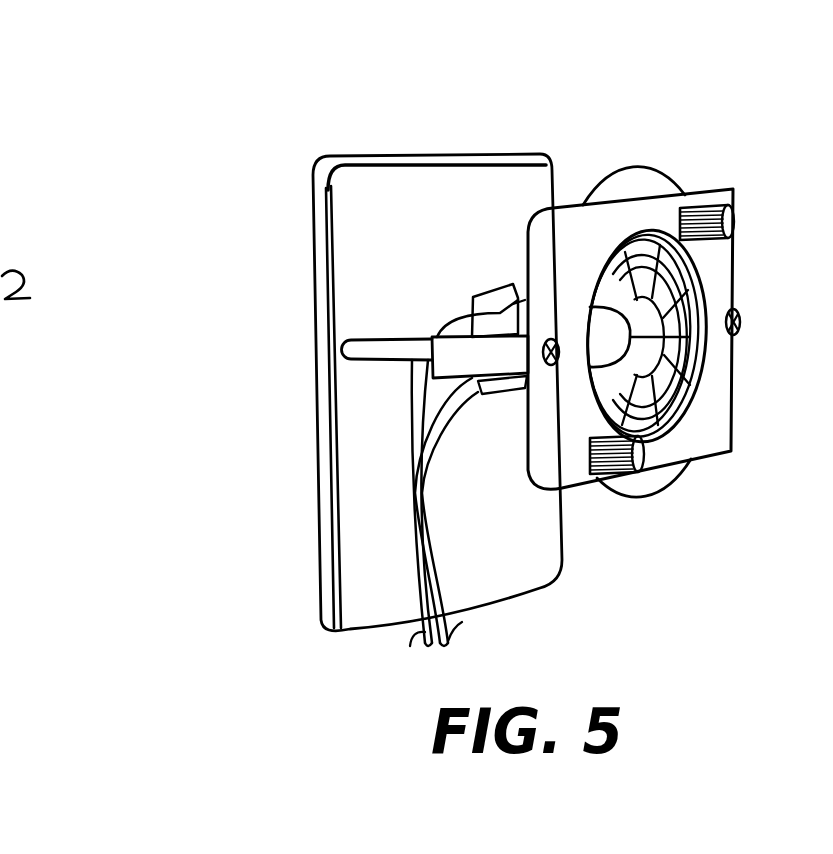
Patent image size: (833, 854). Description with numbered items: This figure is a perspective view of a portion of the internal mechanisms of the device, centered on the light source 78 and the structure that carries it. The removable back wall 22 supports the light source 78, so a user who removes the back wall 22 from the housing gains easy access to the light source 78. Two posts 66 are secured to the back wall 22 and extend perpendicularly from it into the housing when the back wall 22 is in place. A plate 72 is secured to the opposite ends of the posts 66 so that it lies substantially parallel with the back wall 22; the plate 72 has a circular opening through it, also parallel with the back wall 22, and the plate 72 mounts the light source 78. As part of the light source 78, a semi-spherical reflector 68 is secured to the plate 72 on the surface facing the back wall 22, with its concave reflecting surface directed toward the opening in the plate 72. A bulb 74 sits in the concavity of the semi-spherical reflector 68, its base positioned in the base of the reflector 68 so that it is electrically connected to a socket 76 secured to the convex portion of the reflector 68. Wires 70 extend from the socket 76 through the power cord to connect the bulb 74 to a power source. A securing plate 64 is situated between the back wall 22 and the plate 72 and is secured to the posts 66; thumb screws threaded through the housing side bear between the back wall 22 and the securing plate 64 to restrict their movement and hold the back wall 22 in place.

The back wall 22 is at (316, 190).
The securing plate 64 is at (418, 203).
The posts 66 is at (383, 355).
The semi-spherical reflector 68 is at (683, 320).
The wires 70 is at (430, 523).
The plate 72 is at (712, 430).
The bulb 74 is at (607, 340).
The socket 76 is at (493, 305).
The light source 78 is at (670, 148).